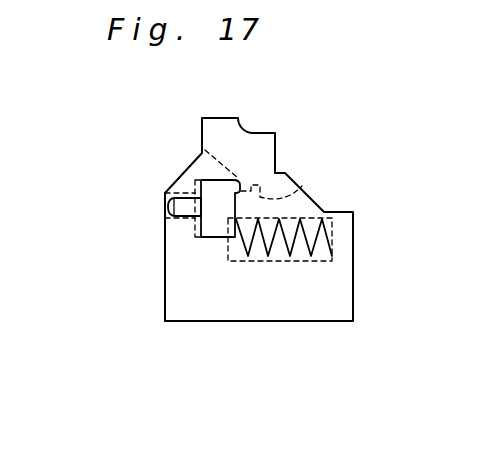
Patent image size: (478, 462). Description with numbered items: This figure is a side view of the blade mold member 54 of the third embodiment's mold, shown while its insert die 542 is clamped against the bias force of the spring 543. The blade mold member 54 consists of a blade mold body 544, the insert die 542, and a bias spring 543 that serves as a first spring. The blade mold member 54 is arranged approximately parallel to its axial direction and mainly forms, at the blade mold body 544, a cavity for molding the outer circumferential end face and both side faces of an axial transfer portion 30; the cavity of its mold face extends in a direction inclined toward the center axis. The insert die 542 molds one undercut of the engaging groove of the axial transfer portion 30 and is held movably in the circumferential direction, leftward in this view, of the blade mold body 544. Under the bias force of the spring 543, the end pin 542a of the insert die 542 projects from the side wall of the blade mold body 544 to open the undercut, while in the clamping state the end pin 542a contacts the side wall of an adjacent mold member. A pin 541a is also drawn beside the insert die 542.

The blade mold member 54 is at (314, 329).
The blade mold body 544 is at (345, 307).
The axial transfer portion 30 is at (263, 152).
The insert die 542 is at (216, 226).
The pin 541a is at (202, 156).
The end pin 542a is at (182, 208).
The bias spring 543 is at (325, 212).